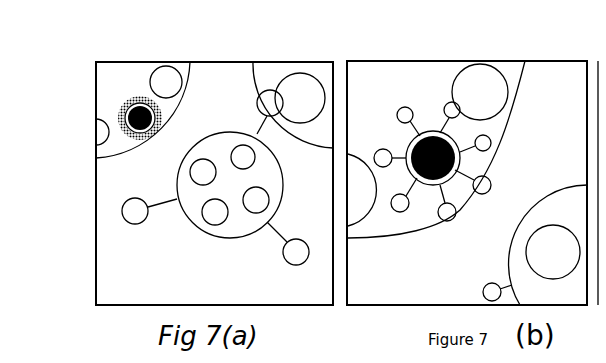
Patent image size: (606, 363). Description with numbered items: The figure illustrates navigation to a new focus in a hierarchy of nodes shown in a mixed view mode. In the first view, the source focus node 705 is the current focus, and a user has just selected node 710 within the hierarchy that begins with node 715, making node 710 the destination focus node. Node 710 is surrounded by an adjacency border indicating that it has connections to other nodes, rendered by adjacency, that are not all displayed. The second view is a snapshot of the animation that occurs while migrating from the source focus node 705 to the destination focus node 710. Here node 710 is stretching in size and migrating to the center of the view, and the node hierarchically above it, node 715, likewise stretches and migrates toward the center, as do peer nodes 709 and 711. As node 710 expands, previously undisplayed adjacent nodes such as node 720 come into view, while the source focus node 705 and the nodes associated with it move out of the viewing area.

In FIG. 7A, the source focus node 705 is at (233, 240).
In FIG. 7B, the source focus node 705 is at (510, 254).
In FIG. 7A, the peer node 709 is at (100, 132).
In FIG. 7B, the peer node 709 is at (362, 200).
In FIG. 7A, the destination focus node 710 is at (138, 128).
In FIG. 7B, the destination focus node 710 is at (497, 170).
In FIG. 7A, the peer node 711 is at (166, 80).
In FIG. 7B, the peer node 711 is at (480, 92).
In FIG. 7A, the node hierarchically above the destination focus node 715 is at (178, 115).
In FIG. 7B, the node hierarchically above the destination focus node 715 is at (520, 108).
In FIG. 7B, the adjacent node 720 is at (398, 111).